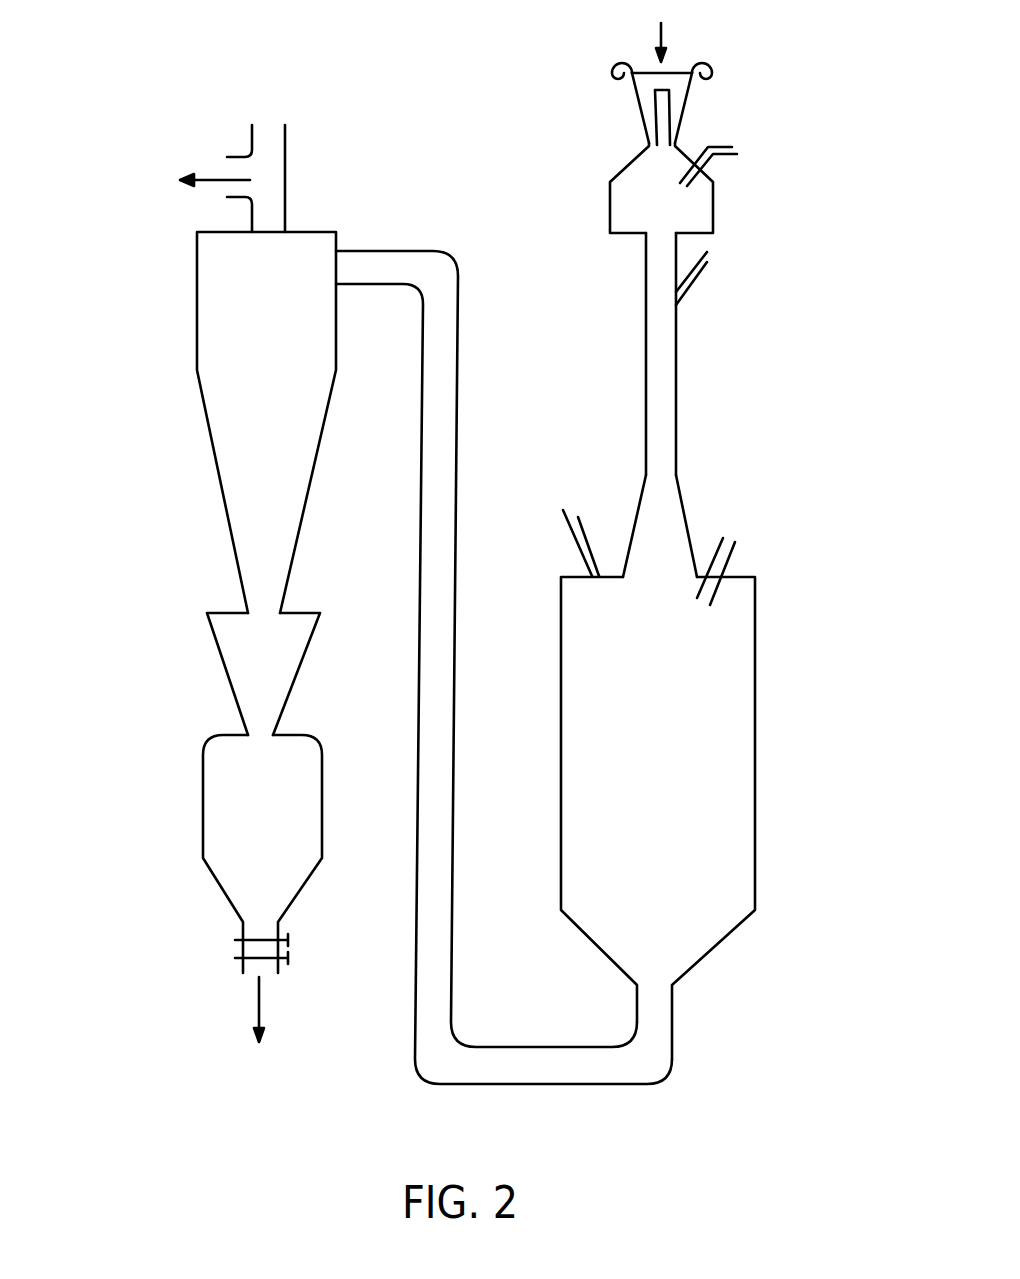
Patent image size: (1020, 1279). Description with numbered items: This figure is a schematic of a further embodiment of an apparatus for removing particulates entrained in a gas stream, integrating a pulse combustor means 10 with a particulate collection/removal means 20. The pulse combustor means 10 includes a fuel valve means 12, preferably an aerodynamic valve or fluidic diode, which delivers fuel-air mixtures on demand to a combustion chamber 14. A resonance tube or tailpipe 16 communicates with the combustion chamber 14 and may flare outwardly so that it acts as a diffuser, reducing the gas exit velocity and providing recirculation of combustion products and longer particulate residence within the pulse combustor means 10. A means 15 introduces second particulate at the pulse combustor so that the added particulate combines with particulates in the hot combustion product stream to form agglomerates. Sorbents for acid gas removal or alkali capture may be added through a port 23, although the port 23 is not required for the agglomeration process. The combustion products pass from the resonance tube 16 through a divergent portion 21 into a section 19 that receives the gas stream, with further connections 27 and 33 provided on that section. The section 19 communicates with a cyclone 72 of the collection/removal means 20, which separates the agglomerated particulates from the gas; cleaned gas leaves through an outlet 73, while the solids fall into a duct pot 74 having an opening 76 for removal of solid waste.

The pulse combustor means 10 is at (820, 439).
The fuel valve means 12 is at (641, 108).
The combustion chamber 14 is at (610, 203).
The means for introducing second particulate 15 is at (698, 280).
The resonance tube 16 is at (645, 372).
The section for receiving a gas stream 19 is at (755, 729).
The particulate collection/removal means 20 is at (123, 526).
The divergent section 21 is at (635, 522).
The port 23 is at (712, 147).
The inlet 27 is at (728, 561).
The inlet 33 is at (578, 543).
The cyclone 72 is at (275, 387).
The gas outlet 73 is at (286, 178).
The duct pot 74 is at (279, 670).
The opening 76 is at (272, 830).